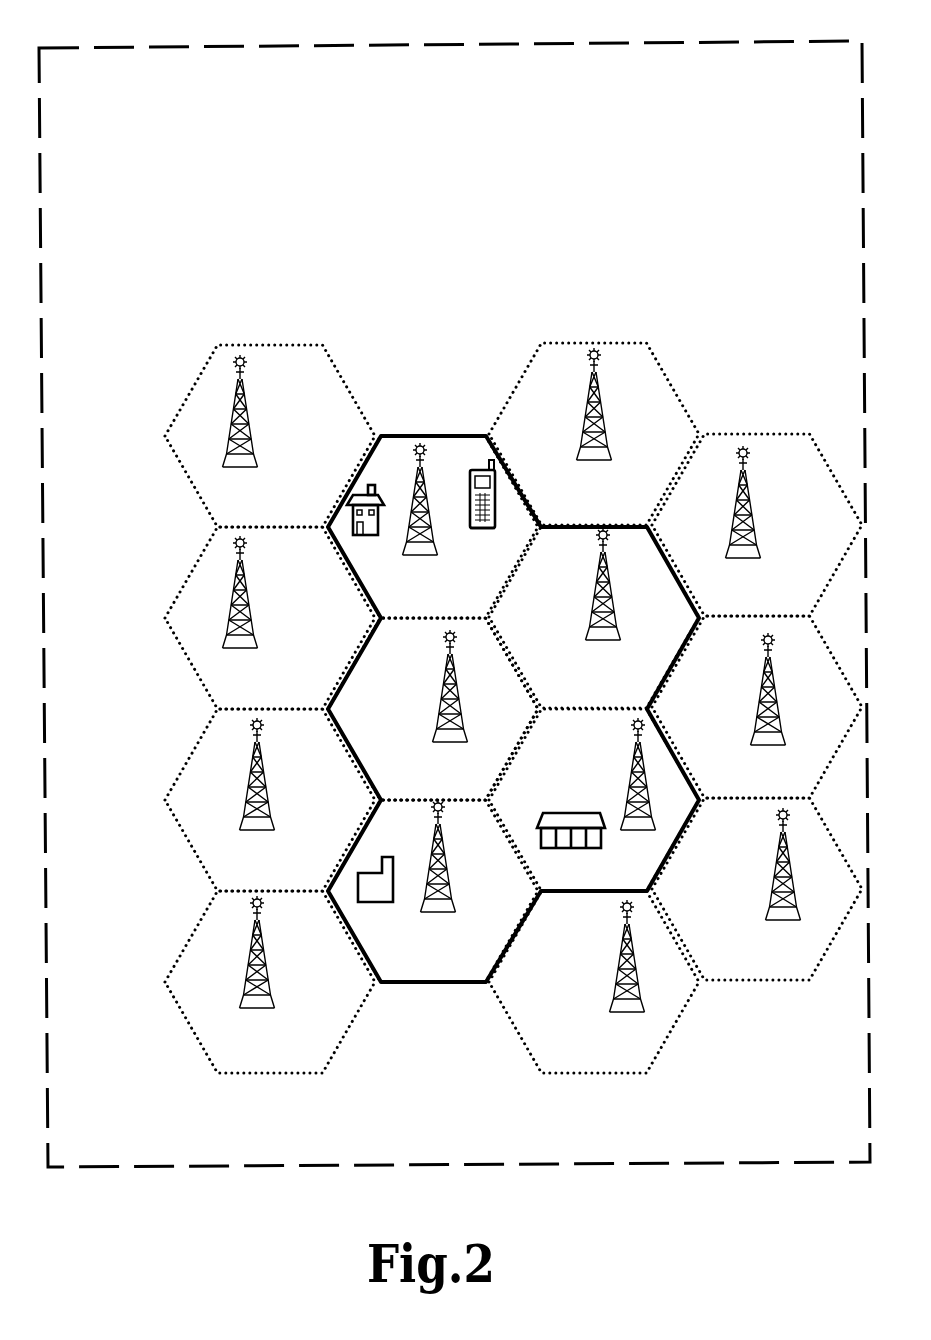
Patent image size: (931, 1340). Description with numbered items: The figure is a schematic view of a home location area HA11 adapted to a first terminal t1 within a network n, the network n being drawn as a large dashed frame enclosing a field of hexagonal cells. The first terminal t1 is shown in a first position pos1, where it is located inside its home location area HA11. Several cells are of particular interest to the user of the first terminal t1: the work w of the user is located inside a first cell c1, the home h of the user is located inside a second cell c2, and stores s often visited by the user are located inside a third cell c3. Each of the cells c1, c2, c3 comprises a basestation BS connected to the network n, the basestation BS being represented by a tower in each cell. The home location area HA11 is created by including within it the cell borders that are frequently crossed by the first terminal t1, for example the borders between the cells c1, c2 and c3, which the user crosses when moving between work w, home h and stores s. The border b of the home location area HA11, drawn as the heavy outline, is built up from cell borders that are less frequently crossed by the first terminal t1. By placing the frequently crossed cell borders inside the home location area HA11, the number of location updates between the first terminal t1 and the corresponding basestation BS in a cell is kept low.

The network n is at (133, 48).
The home location area HA11 is at (437, 398).
The border of the home location area b is at (448, 436).
The first cell c1 is at (511, 837).
The second cell c2 is at (361, 456).
The third cell c3 is at (523, 738).
The basestation BS is at (601, 406).
The home h is at (367, 536).
The first terminal t1 is at (470, 500).
The first position pos1 is at (484, 538).
The stores s is at (580, 848).
The work w is at (378, 902).